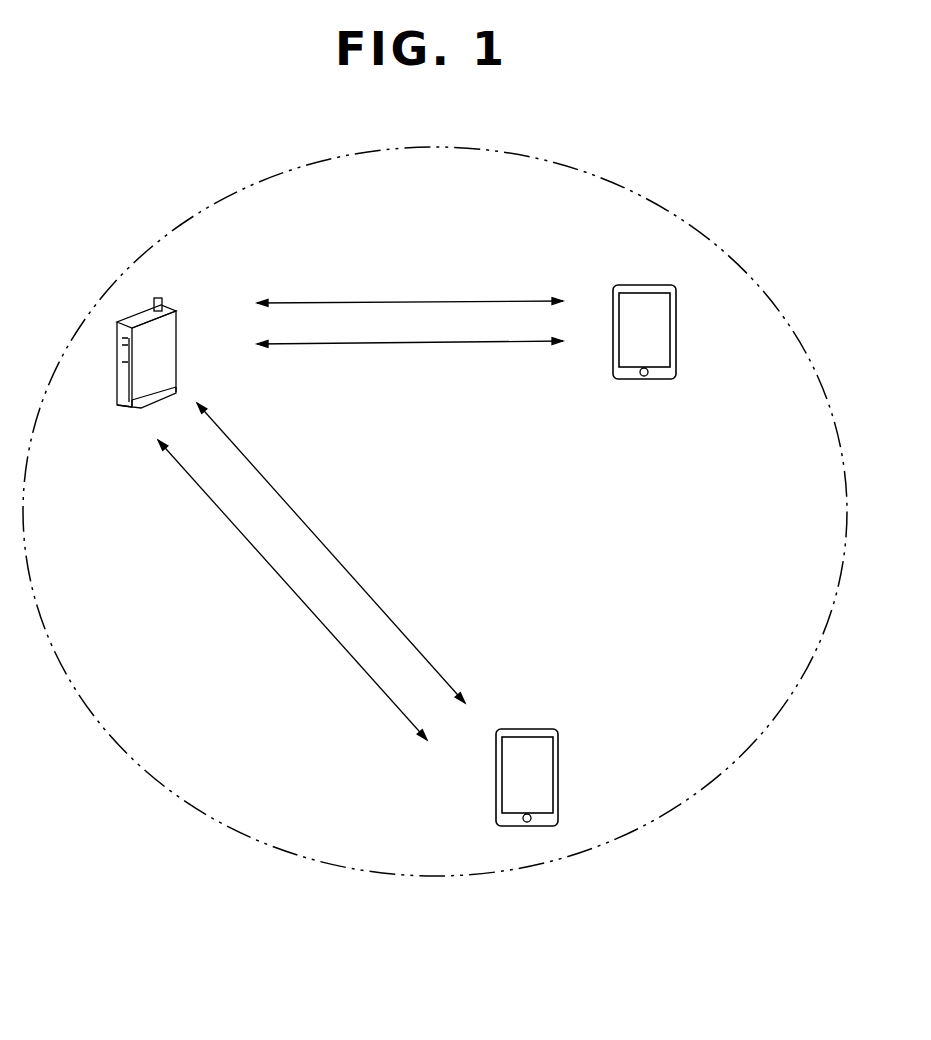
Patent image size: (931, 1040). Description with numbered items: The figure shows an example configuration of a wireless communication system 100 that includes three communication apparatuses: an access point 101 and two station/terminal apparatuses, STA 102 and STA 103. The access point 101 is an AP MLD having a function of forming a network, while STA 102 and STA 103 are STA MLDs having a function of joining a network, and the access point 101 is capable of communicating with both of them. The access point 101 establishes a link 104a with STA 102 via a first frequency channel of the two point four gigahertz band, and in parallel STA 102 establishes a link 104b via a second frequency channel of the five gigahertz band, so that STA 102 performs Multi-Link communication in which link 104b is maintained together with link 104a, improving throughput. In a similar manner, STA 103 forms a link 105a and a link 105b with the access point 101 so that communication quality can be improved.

The wireless communication system 100 is at (728, 772).
The access point 101 is at (176, 311).
The station/terminal apparatus 102 is at (530, 728).
The station/terminal apparatus 103 is at (630, 284).
The link 104a is at (335, 555).
The link 104b is at (285, 583).
The link 105a is at (423, 302).
The link 105b is at (423, 346).